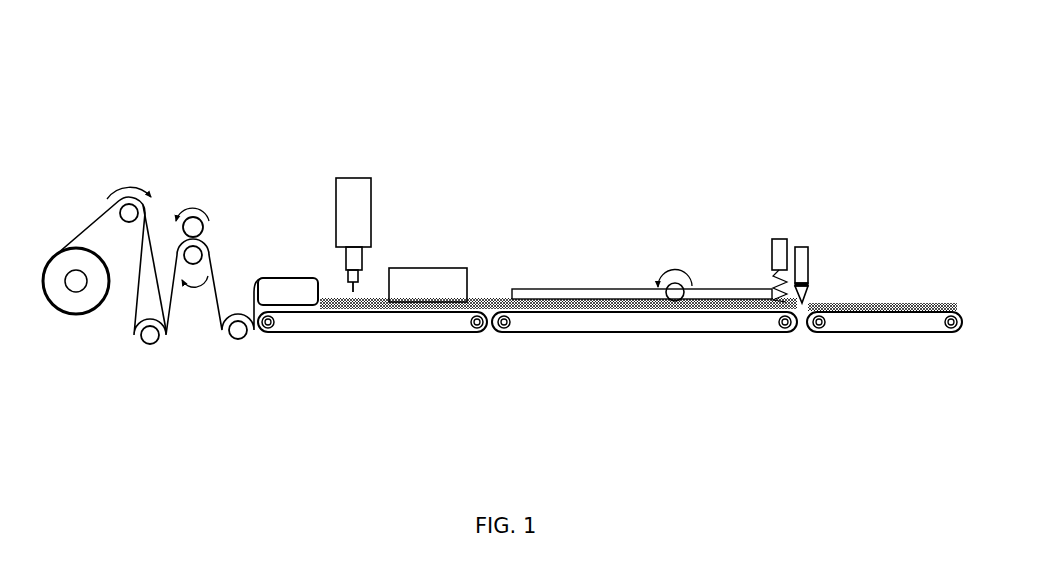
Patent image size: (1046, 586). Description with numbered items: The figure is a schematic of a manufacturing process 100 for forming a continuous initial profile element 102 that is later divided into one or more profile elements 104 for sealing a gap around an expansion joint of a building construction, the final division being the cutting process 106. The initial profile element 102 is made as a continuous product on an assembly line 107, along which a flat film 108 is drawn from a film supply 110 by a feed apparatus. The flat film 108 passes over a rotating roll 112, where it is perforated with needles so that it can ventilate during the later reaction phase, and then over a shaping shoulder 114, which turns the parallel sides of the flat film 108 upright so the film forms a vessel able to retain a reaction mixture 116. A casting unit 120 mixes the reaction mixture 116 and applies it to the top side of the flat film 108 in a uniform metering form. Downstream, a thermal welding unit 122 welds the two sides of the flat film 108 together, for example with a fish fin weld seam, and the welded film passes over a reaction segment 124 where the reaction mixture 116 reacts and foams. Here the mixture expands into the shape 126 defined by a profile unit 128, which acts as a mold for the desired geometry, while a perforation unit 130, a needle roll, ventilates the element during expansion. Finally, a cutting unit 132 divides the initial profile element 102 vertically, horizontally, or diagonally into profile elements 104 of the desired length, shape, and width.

The manufacturing process 100 is at (573, 118).
The initial profile element 102 is at (367, 297).
The profile element 104 is at (870, 305).
The cutting process 106 is at (805, 198).
The assembly line 107 is at (282, 323).
The flat film 108 is at (170, 317).
The film supply 110 is at (76, 300).
The rotating roll 112 is at (190, 233).
The shaping shoulder 114 is at (270, 287).
The reaction mixture 116 is at (352, 290).
The casting unit 120 is at (347, 199).
The thermal welding unit 122 is at (435, 288).
The reaction segment 124 is at (533, 303).
The shape 126 is at (613, 320).
The profile unit 128 is at (708, 295).
The perforation unit 130 is at (677, 288).
The cutting unit 132 is at (778, 238).